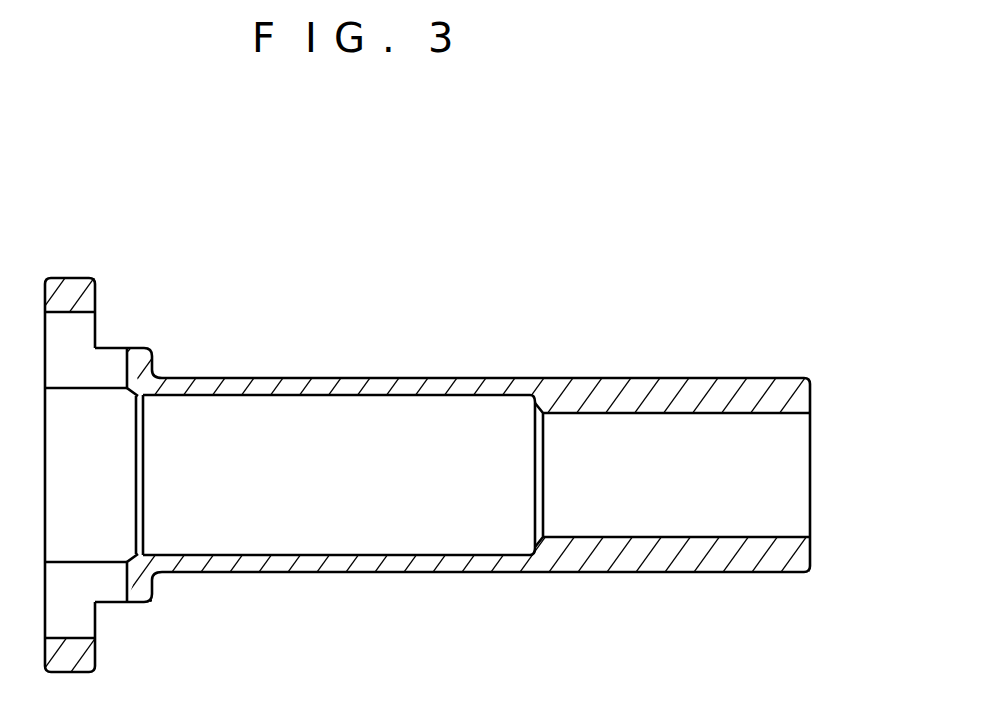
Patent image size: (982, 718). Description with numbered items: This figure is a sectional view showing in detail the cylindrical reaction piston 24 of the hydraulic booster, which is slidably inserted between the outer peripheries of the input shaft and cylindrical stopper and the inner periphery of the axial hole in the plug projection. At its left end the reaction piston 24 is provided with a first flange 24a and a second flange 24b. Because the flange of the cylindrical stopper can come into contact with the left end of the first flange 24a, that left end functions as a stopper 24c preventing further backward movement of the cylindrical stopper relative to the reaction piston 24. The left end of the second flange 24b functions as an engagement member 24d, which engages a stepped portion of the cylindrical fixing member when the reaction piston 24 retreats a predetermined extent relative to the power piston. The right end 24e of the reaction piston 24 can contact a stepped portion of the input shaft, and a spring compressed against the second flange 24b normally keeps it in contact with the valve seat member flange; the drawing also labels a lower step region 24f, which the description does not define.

The reaction piston 24 is at (508, 330).
The first flange 24a is at (143, 363).
The second flange 24b is at (78, 290).
The stopper 24c is at (127, 356).
The engagement member 24d is at (98, 297).
The right end 24e is at (810, 393).
The step portion 24f is at (122, 592).